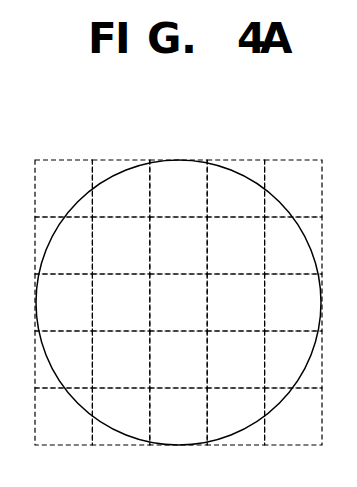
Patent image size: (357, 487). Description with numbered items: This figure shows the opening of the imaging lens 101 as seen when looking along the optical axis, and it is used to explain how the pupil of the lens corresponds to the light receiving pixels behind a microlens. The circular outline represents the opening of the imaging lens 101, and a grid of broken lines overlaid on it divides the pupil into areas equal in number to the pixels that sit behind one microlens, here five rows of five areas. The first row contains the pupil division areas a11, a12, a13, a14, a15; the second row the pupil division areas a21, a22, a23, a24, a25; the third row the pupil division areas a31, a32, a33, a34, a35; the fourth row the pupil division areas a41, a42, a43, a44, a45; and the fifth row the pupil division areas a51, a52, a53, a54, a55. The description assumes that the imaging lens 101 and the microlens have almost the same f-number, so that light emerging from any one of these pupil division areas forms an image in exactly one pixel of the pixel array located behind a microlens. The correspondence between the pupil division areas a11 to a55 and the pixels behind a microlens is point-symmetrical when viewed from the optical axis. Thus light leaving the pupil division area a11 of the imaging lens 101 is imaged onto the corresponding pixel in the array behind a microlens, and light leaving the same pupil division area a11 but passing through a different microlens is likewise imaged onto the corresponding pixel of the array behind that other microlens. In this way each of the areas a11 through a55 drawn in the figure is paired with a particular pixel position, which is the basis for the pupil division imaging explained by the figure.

The imaging lens 101 is at (237, 162).
The pupil division area a11 is at (63, 188).
The pupil division area a12 is at (120, 188).
The pupil division area a13 is at (178, 188).
The pupil division area a14 is at (235, 188).
The pupil division area a15 is at (293, 188).
The pupil division area a21 is at (63, 245).
The pupil division area a22 is at (120, 245).
The pupil division area a23 is at (178, 245).
The pupil division area a24 is at (235, 245).
The pupil division area a25 is at (293, 245).
The pupil division area a31 is at (63, 302).
The pupil division area a32 is at (120, 302).
The pupil division area a33 is at (178, 302).
The pupil division area a34 is at (235, 302).
The pupil division area a35 is at (293, 302).
The pupil division area a41 is at (63, 359).
The pupil division area a42 is at (120, 359).
The pupil division area a43 is at (178, 359).
The pupil division area a44 is at (235, 359).
The pupil division area a45 is at (293, 359).
The pupil division area a51 is at (63, 416).
The pupil division area a52 is at (120, 416).
The pupil division area a53 is at (178, 416).
The pupil division area a54 is at (235, 416).
The pupil division area a55 is at (293, 416).